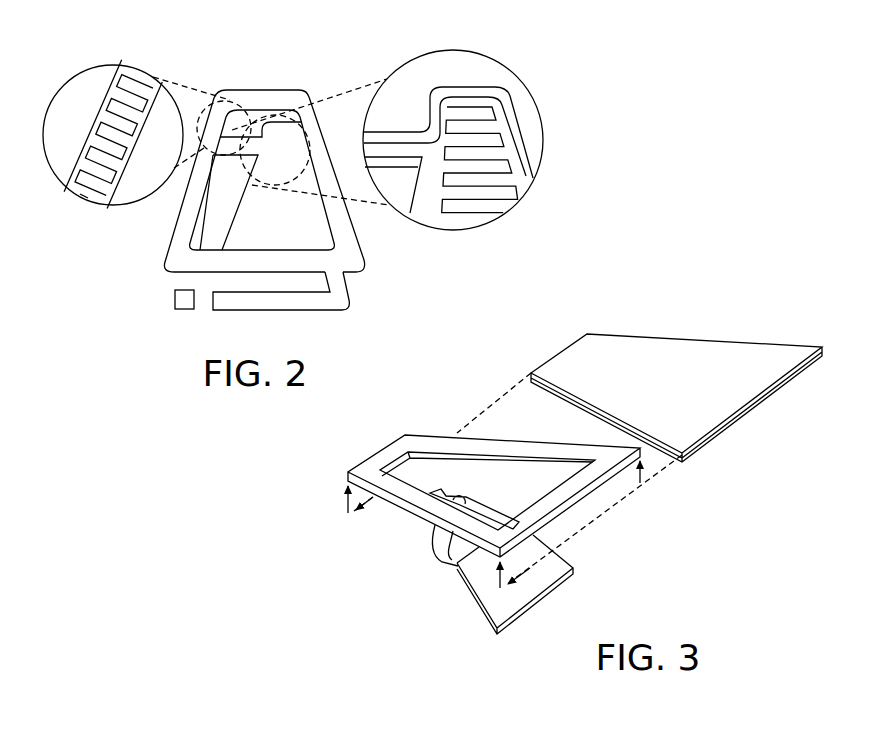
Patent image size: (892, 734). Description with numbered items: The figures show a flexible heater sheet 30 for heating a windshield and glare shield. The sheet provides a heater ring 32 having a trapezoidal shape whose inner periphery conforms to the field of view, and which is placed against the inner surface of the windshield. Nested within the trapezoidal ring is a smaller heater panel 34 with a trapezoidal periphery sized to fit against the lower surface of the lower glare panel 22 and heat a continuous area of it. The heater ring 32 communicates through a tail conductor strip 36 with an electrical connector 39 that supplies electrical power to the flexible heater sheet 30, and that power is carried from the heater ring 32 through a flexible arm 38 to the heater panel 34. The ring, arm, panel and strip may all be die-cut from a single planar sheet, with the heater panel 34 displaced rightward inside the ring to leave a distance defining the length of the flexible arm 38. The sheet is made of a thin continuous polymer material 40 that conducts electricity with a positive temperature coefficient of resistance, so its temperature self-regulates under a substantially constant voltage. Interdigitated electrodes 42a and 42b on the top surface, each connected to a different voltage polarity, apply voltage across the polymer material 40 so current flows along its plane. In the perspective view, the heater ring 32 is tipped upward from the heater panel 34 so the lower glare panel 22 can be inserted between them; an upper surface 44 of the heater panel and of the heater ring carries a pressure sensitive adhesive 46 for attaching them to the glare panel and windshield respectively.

In FIG. 3, the lower glare panel 22 is at (610, 350).
In FIG. 2, the flexible heater sheet 30 is at (267, 54).
In FIG. 2, the heater ring 32 is at (236, 98).
In FIG. 3, the heater ring 32 is at (387, 452).
In FIG. 2, the heater panel 34 is at (327, 225).
In FIG. 3, the heater panel 34 is at (528, 593).
In FIG. 2, the tail conductor strip 36 is at (274, 303).
In FIG. 2, the flexible arm 38 is at (230, 145).
In FIG. 2, the electrical connector 39 is at (175, 298).
In FIG. 2, the polymer material 40 is at (90, 197).
In FIG. 2, the interdigitated electrode 42a is at (112, 90).
In FIG. 2, the interdigitated electrode 42b is at (158, 94).
In FIG. 3, the upper surface 44 is at (402, 492).
In FIG. 3, the pressure sensitive adhesive 46 is at (371, 471).